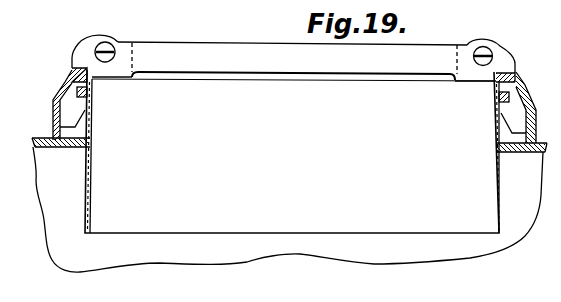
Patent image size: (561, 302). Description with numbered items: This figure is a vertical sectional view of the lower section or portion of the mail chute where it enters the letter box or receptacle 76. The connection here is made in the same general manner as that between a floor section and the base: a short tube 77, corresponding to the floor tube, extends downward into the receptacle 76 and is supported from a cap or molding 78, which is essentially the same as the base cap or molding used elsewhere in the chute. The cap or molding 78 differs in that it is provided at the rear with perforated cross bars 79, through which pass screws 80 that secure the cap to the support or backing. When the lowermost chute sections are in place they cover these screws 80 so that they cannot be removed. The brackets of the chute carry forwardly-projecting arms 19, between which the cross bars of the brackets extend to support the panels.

The forwardly-projecting arms 19 is at (502, 63).
The letter box or receptacle 76 is at (529, 152).
The short tube 77 is at (492, 195).
The cap or molding 78 is at (65, 87).
The perforated cross bars 79 is at (153, 58).
The screws 80 is at (482, 46).